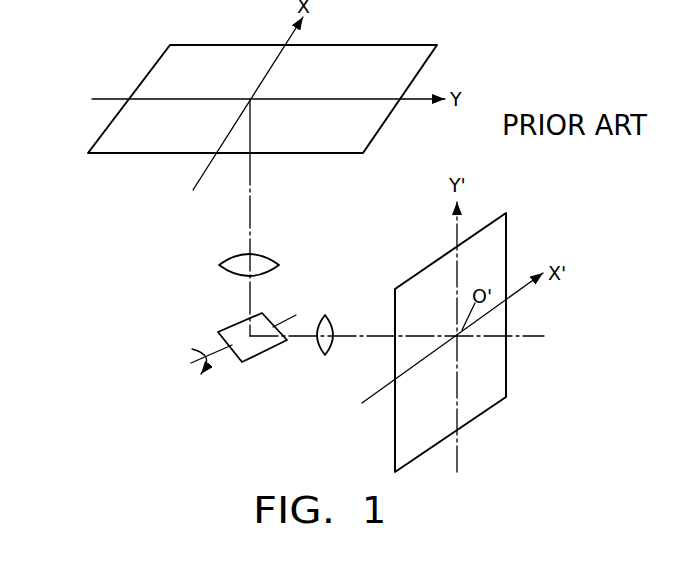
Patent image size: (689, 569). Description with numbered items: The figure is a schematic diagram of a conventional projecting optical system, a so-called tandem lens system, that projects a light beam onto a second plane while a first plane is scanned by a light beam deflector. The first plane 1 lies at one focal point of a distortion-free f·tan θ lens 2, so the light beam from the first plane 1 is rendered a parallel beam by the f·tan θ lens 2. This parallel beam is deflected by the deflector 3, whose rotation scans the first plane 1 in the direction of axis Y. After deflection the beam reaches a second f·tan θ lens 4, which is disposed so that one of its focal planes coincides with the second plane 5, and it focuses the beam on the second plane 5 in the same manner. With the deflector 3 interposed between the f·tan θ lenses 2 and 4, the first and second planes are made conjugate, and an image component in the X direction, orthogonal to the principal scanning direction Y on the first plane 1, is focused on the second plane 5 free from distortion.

The first plane 1 is at (425, 62).
The f·tan θ lens 2 is at (267, 253).
The deflector 3 is at (242, 355).
The f·tan θ lens 4 is at (327, 347).
The second plane 5 is at (482, 405).